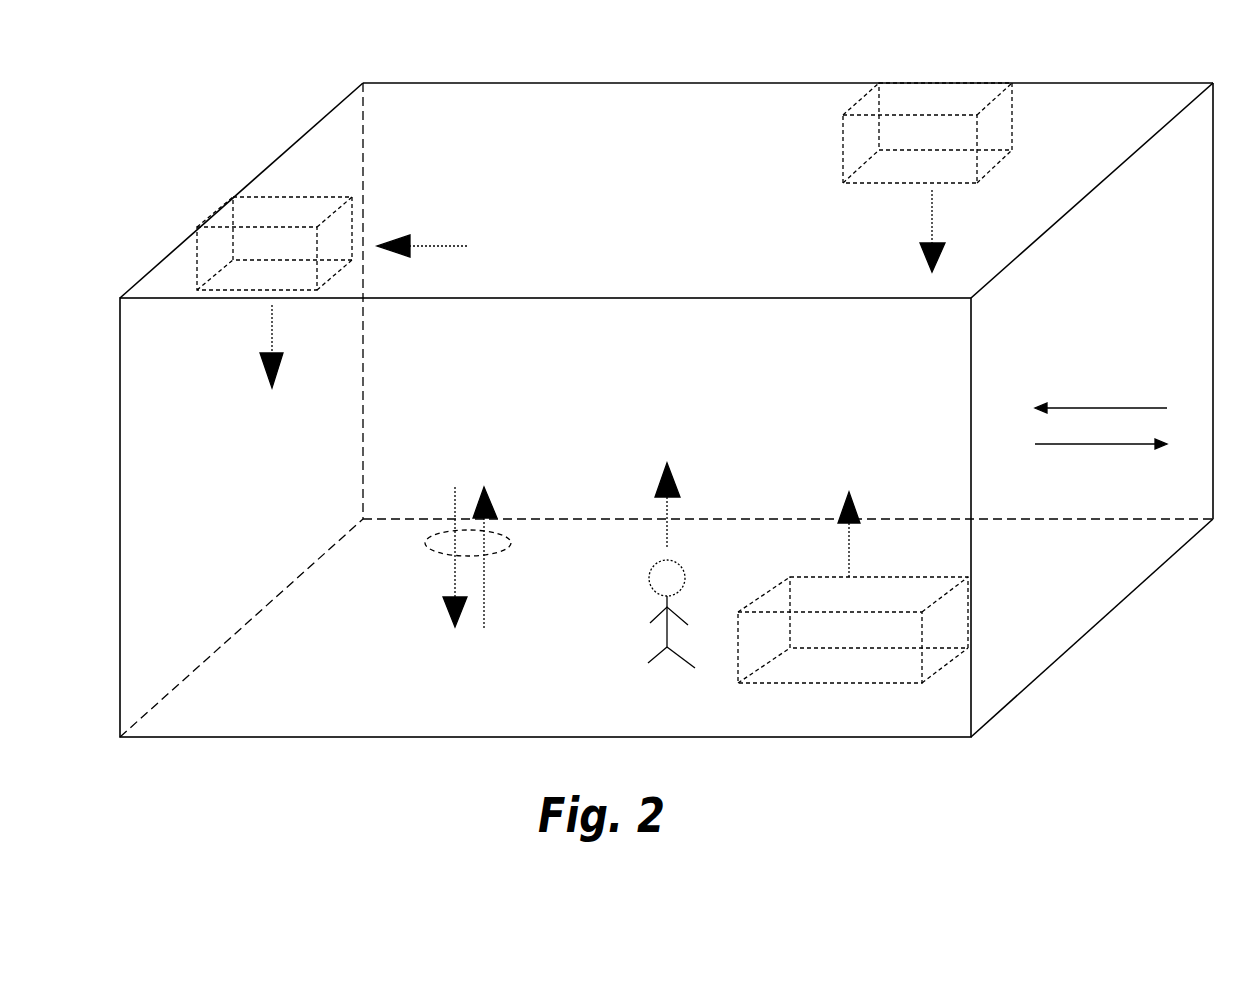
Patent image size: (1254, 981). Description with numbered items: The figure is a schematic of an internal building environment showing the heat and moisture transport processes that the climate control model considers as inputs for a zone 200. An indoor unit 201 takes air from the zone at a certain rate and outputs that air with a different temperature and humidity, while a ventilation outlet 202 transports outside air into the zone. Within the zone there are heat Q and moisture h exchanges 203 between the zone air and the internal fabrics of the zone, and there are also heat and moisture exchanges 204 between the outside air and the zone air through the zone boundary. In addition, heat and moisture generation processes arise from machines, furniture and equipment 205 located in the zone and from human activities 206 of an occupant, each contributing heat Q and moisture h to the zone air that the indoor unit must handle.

The zone 200 is at (523, 92).
The indoor unit 201 is at (268, 175).
The ventilation outlet 202 is at (948, 92).
The heat and moisture exchanges 203 is at (437, 555).
The heat and moisture exchanges 204 is at (1092, 402).
The machines, furniture, equipment 205 is at (968, 560).
The human activities 206 is at (718, 382).